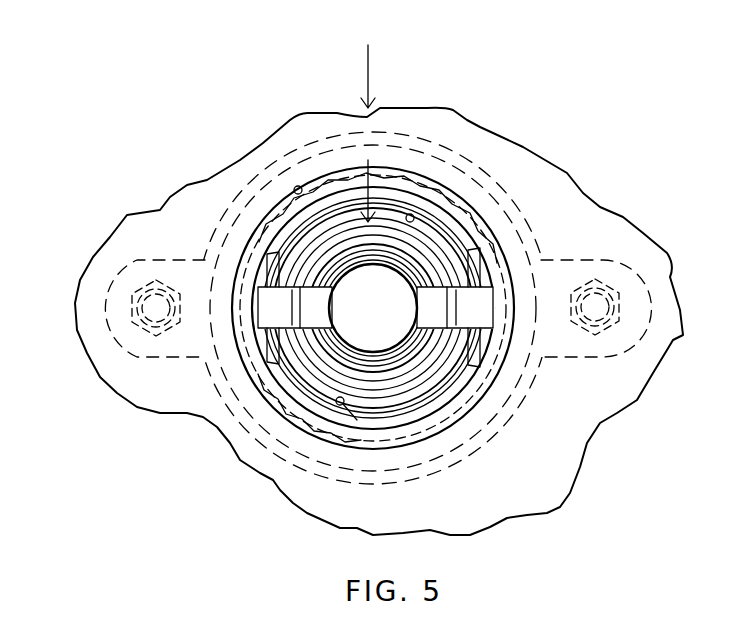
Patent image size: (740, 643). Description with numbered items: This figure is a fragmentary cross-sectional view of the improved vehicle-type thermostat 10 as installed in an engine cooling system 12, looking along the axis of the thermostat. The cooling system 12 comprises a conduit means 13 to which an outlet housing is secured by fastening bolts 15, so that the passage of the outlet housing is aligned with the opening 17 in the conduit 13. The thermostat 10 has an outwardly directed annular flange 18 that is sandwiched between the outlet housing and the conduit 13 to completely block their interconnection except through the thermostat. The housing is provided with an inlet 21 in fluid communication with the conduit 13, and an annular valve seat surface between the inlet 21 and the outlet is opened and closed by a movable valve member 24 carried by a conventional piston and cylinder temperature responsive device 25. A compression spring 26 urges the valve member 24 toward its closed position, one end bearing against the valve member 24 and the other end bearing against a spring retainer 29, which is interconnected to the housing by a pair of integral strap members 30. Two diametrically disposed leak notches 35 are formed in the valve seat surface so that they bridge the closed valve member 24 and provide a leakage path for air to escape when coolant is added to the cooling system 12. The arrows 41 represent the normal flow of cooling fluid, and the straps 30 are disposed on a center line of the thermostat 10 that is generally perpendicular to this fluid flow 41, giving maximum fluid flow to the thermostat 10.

The thermostat 10 is at (297, 405).
The engine cooling system 12 is at (594, 170).
The conduit means 13 is at (480, 143).
The fastening bolts 15 is at (130, 288).
The opening 17 is at (296, 186).
The annular flange 18 is at (285, 464).
The inlet 21 is at (427, 248).
The valve member 24 is at (298, 365).
The piston and cylinder temperature responsive device 25 is at (408, 340).
The compression spring 26 is at (405, 367).
The spring retainer 29 is at (313, 288).
The strap members 30 is at (280, 300).
The leak notches 35 is at (408, 215).
The arrows 41 is at (368, 162).